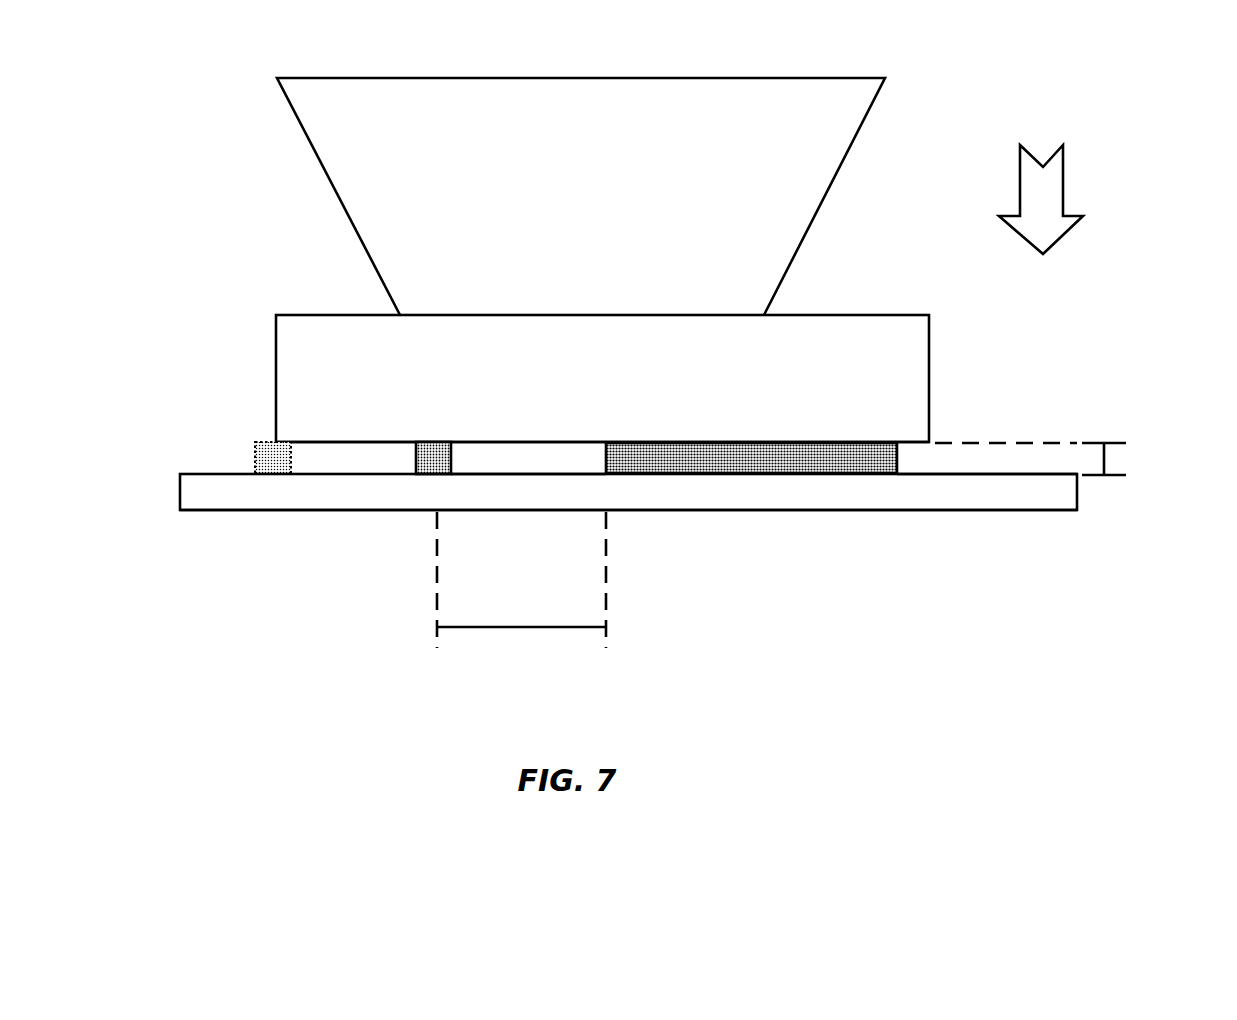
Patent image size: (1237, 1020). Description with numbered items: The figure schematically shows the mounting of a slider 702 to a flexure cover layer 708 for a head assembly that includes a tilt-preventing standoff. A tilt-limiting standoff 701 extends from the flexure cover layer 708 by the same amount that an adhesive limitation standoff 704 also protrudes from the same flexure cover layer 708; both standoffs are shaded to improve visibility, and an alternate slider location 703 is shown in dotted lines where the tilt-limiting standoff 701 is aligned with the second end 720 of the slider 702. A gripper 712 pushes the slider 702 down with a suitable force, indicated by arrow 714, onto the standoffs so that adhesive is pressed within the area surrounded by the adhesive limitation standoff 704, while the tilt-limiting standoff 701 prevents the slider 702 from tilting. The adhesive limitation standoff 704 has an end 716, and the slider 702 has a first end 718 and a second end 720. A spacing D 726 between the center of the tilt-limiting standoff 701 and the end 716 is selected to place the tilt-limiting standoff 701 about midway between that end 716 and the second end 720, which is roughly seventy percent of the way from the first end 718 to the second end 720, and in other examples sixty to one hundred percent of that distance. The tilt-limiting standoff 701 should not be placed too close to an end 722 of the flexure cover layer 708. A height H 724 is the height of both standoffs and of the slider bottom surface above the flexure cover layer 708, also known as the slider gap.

The tilt-limiting standoff 701 is at (422, 466).
The slider 702 is at (878, 316).
The alternate slider location 703 is at (273, 466).
The adhesive limitation standoff 704 is at (882, 462).
The flexure cover layer 708 is at (783, 512).
The gripper 712 is at (315, 155).
The arrow 714 is at (1036, 162).
The end of adhesive limitation standoff 716 is at (609, 478).
The first end of slider 718 is at (933, 462).
The second end of slider 720 is at (266, 432).
The end of flexure cover layer 722 is at (181, 516).
The height H 724 is at (1130, 460).
The spacing D 726 is at (536, 646).